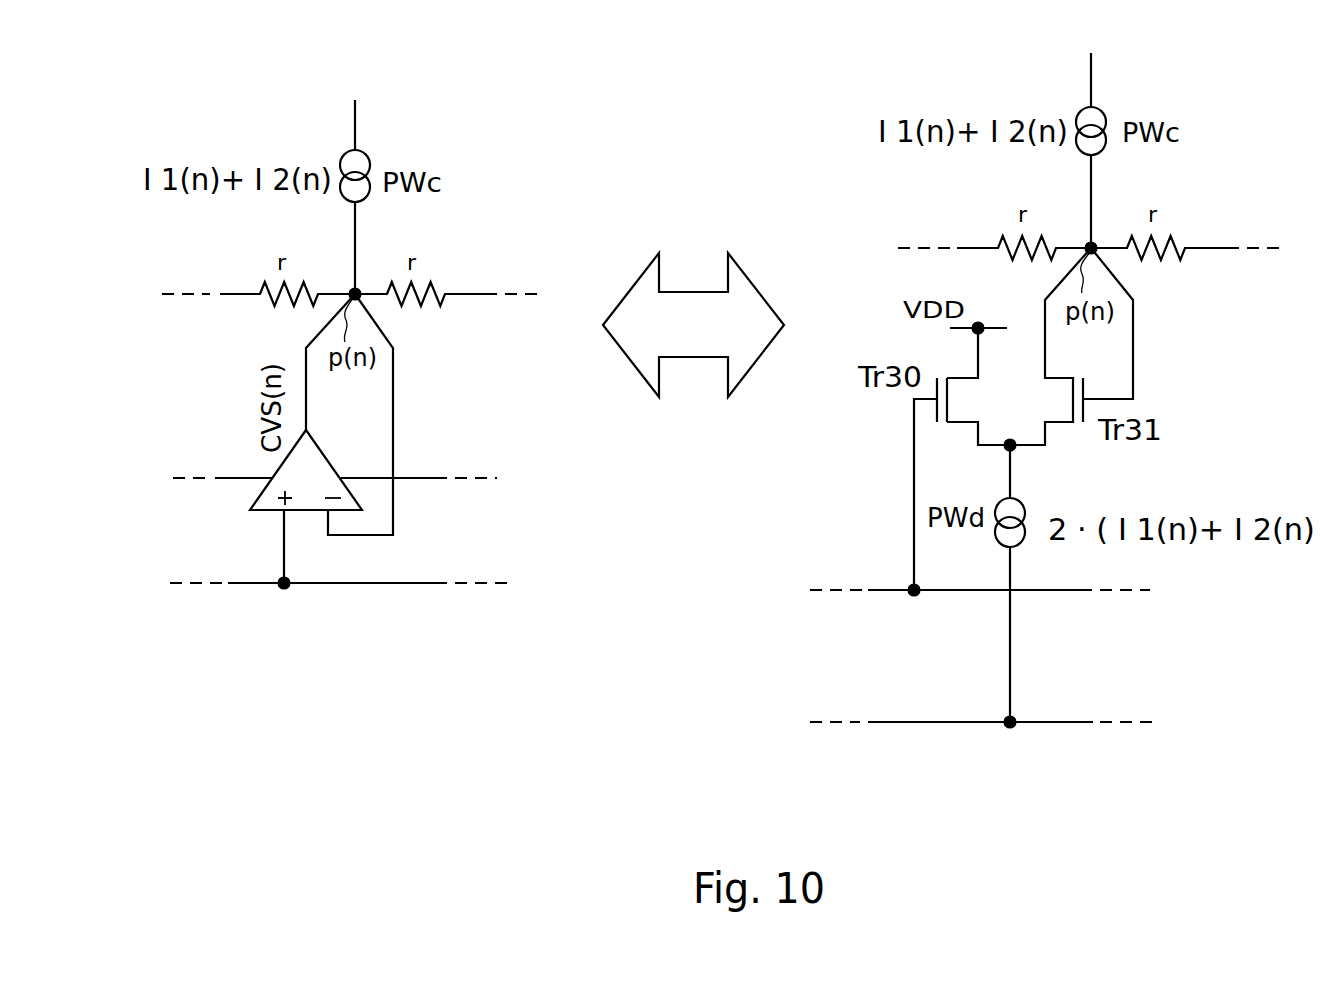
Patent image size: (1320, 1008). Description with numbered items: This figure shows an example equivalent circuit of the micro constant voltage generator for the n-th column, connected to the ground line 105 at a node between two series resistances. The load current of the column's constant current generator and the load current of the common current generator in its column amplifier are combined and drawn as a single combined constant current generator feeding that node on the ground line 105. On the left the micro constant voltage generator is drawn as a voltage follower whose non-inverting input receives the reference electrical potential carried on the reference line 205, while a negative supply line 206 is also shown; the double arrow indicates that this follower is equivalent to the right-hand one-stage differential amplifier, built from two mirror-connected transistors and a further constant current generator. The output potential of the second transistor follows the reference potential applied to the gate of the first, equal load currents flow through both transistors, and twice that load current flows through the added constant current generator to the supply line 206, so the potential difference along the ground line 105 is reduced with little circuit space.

The ground line 105 is at (487, 292).
The reference voltage (Vref) line 205 is at (413, 585).
The VSS power supply line 206 is at (447, 478).